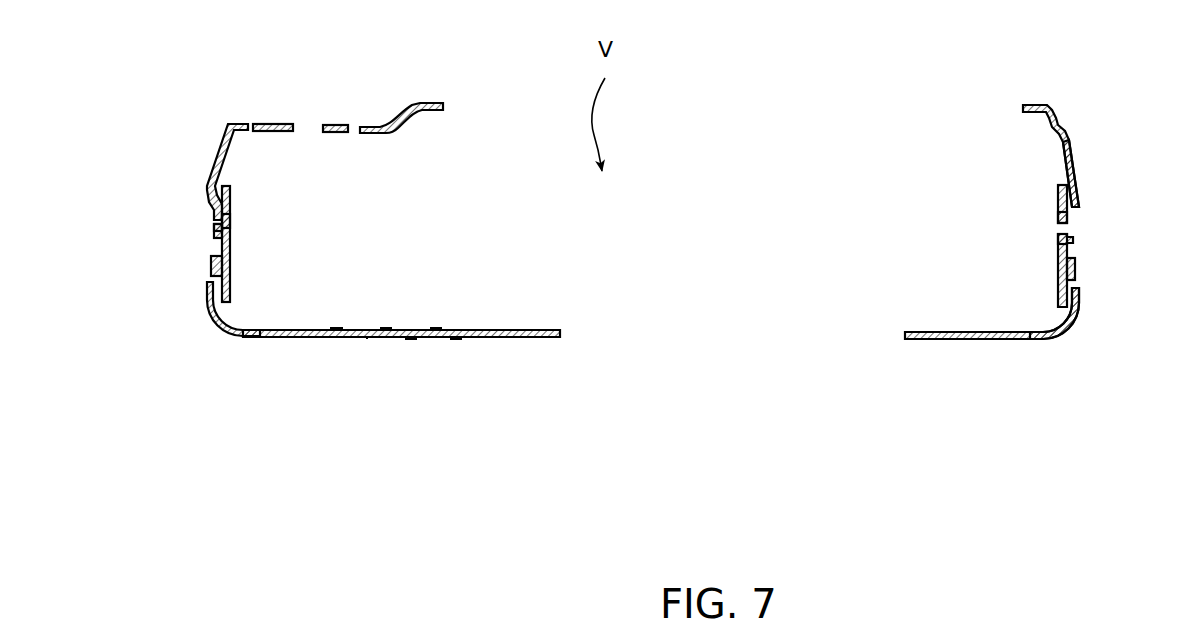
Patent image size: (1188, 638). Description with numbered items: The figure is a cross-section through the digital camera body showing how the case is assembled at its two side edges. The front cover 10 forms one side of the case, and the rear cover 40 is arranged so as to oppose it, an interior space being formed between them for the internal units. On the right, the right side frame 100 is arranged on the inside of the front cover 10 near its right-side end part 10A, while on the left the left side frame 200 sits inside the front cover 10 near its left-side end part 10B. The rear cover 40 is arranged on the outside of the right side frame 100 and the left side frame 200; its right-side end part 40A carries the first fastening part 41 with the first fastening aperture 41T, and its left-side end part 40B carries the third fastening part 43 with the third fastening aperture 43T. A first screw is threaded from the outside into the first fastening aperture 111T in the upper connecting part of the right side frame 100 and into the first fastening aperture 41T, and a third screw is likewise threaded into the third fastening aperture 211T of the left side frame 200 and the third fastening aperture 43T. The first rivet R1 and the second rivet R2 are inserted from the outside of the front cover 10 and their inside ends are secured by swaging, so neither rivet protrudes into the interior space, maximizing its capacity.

The front cover 10 is at (411, 338).
The right-side end part of the front cover 10A is at (1083, 309).
The left-side end part of the front cover 10B is at (202, 305).
The rear cover 40 is at (332, 124).
The right-side end part of the rear cover 40A is at (1076, 145).
The left-side end part of the rear cover 40B is at (207, 145).
The first fastening part 41 is at (1071, 238).
The first fastening aperture 41T is at (1080, 228).
The third fastening part 43 is at (215, 233).
The third fastening aperture 43T is at (204, 222).
The right side frame 100 is at (1056, 196).
The first fastening aperture of the right side frame 111T is at (1052, 226).
The left side frame 200 is at (232, 188).
The third fastening aperture of the left side frame 211T is at (244, 220).
The first rivet R1 is at (1076, 268).
The second rivet R2 is at (211, 265).